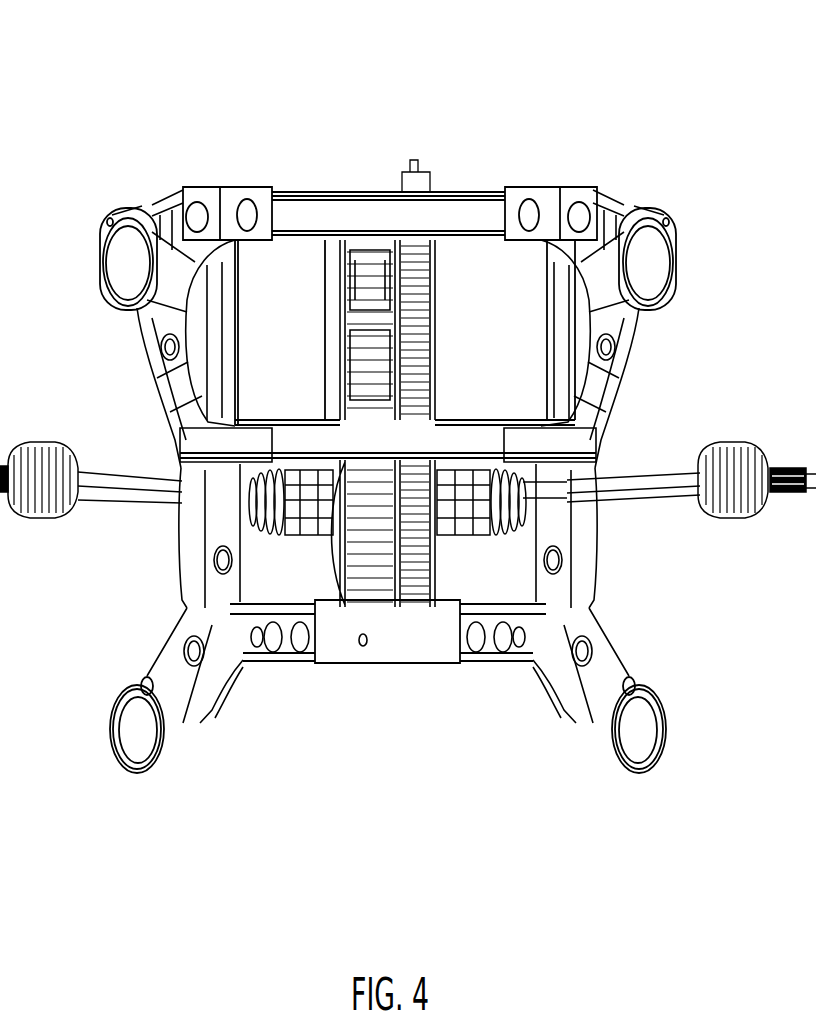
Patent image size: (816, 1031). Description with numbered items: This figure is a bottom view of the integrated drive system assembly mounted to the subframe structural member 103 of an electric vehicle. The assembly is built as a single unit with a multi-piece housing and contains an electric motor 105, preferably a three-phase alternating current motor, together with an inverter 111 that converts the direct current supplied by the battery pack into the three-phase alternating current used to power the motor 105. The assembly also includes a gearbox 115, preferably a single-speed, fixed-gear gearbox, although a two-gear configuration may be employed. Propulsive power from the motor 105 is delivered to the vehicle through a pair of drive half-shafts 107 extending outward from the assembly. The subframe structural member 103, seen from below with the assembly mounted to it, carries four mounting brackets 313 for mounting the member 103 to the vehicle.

The subframe structural member 103 is at (307, 205).
The electric motor 105 is at (295, 346).
The inverter 111 is at (562, 351).
The drive half-shafts 107 is at (103, 485).
The gearbox 115 is at (413, 462).
The mounting brackets 313 is at (115, 180).